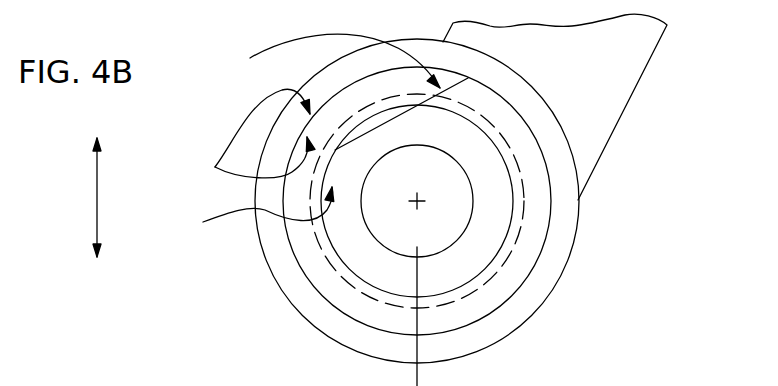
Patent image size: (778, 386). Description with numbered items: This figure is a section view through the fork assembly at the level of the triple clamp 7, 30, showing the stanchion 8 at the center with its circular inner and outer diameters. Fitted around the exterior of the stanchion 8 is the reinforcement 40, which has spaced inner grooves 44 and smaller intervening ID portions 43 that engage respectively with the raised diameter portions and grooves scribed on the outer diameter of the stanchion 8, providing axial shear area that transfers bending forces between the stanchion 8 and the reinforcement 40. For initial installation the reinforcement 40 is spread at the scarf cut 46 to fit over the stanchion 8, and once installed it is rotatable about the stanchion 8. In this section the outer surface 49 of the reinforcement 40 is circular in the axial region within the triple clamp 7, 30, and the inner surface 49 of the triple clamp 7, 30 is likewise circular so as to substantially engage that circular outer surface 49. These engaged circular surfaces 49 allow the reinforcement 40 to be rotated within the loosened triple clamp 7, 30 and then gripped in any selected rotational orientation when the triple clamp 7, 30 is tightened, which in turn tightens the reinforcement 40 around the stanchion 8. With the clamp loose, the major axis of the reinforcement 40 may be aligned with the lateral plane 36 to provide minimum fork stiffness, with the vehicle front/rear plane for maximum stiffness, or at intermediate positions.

The triple clamp 7 is at (563, 167).
The stanchion 8 is at (462, 252).
The triple clamp 30 is at (321, 312).
The lateral plane 36 is at (97, 212).
The reinforcement 40 is at (532, 232).
The intervening ID portions 43 is at (257, 212).
The inner grooves 44 is at (455, 104).
The scarf cut 46 is at (329, 61).
The outer surface 49 is at (215, 167).